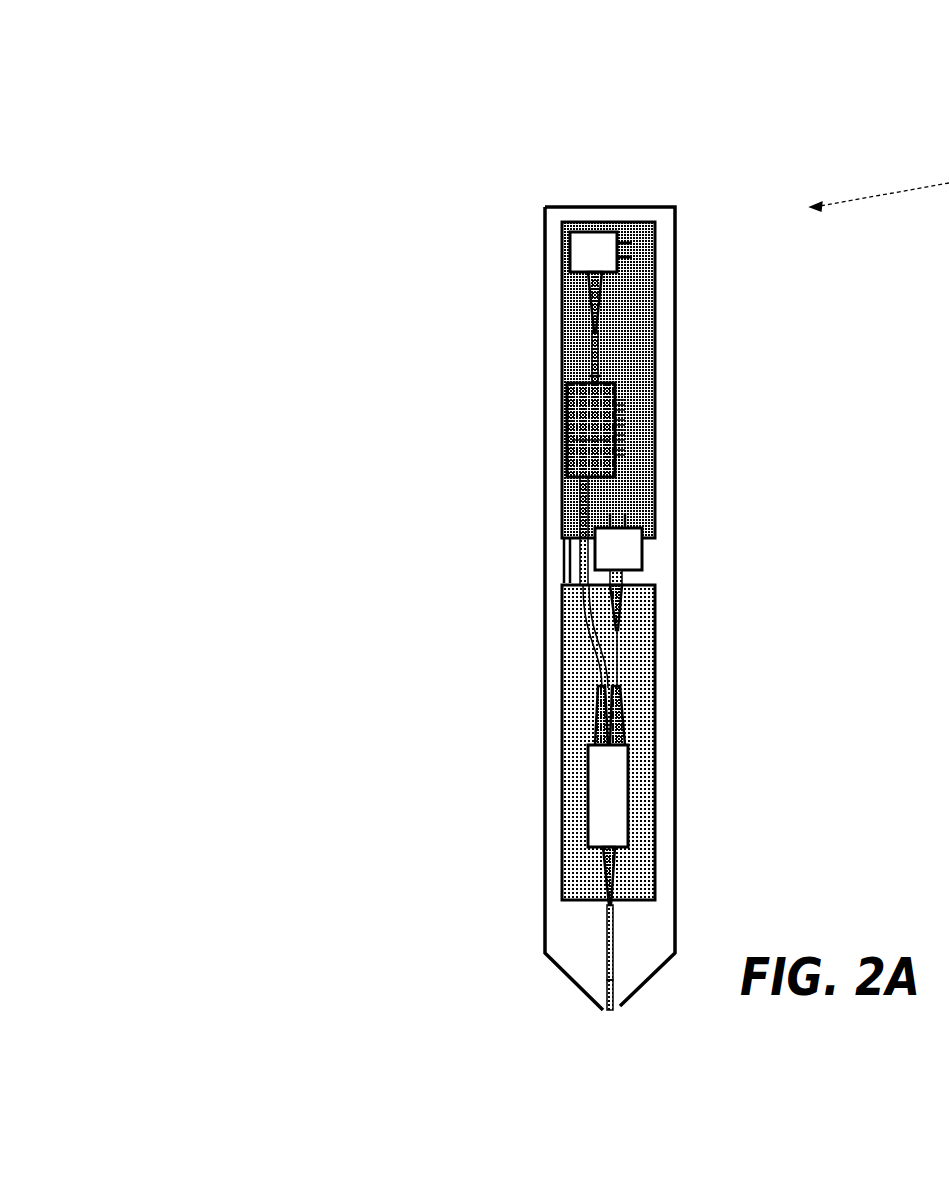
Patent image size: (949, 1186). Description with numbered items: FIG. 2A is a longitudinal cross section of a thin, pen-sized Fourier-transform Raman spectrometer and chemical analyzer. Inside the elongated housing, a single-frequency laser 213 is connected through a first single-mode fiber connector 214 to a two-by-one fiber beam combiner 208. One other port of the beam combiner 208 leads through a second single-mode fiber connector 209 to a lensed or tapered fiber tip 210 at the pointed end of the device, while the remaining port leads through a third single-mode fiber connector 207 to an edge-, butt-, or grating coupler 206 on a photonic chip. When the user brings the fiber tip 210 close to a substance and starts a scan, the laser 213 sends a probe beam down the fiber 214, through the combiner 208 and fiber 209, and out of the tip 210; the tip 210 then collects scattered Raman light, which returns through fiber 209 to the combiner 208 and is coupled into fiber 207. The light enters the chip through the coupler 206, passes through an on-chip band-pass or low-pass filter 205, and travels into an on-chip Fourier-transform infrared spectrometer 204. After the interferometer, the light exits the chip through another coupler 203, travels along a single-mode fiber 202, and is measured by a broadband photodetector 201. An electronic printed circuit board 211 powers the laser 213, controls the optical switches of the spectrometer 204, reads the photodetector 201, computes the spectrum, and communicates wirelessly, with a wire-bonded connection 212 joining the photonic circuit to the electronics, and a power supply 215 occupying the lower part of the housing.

The broadband photodetector 201 is at (585, 253).
The fourth single-mode fiber coupler 202 is at (580, 343).
The coupler 203 is at (585, 377).
The on-chip Fourier-transform infrared spectrometer 204 is at (582, 413).
The on-chip band-pass or low-pass filter 205 is at (580, 463).
The edge-, butt-, or grating coupler 206 is at (565, 488).
The third single-mode fiber connector 207 is at (585, 613).
The 2×1 beam combiner 208 is at (607, 805).
The second single-mode fiber connector 209 is at (610, 953).
The lensed or tapered fiber tip 210 is at (607, 1010).
The electronic printed circuit board 211 is at (630, 335).
The wire-bonded or bump-bonded connection from photonic circuit to electronic PCB 212 is at (627, 440).
The single-frequency laser 213 is at (617, 548).
The first single-mode fiber connector 214 is at (620, 647).
The power supply 215 is at (637, 730).